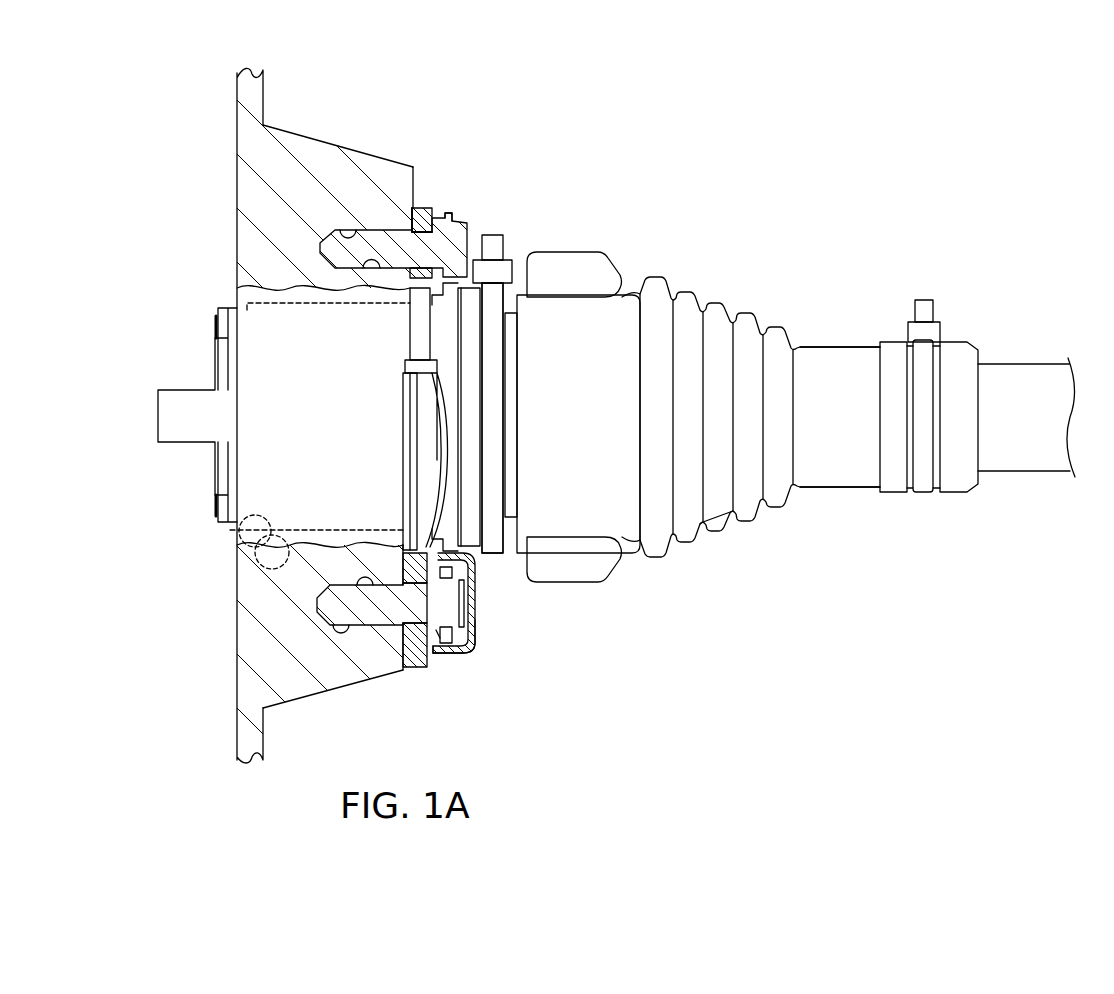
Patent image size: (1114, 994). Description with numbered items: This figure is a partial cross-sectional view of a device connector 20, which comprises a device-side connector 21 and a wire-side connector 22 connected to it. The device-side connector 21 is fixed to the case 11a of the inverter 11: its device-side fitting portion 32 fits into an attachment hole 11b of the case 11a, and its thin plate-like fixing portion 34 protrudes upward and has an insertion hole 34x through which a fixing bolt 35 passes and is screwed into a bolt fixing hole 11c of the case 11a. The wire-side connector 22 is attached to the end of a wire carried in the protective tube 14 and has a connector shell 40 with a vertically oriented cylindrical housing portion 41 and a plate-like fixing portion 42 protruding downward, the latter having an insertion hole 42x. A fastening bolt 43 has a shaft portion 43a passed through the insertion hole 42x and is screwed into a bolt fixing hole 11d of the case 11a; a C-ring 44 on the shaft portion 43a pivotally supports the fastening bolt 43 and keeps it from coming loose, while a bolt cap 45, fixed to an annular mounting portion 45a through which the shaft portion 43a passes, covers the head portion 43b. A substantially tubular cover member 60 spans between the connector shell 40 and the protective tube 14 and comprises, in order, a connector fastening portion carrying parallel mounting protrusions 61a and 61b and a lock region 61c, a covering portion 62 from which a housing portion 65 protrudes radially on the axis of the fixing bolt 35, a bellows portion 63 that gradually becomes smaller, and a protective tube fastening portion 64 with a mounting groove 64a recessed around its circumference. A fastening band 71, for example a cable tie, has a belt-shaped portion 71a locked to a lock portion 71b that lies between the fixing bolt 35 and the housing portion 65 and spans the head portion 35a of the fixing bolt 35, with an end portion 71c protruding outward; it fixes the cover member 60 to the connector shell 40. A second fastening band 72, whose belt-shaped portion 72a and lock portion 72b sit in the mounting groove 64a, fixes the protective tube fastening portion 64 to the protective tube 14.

The inverter 11 is at (268, 94).
The case 11a is at (337, 140).
The attachment hole 11b is at (237, 526).
The bolt fixing hole 11c is at (338, 228).
The bolt fixing hole 11d is at (320, 622).
The protective tube 14 is at (1033, 364).
The device connector 20 is at (624, 154).
The device-side connector 21 is at (214, 293).
The wire-side connector 22 is at (648, 240).
The device-side fitting portion 32 is at (268, 562).
The fixing portion 34 is at (425, 209).
The insertion hole 34x is at (413, 217).
The fixing bolt 35 is at (388, 229).
The head portion 35a is at (449, 215).
The connector shell 40 is at (370, 461).
The housing portion 41 is at (428, 470).
The fixing portion 42 is at (425, 545).
The insertion hole 42x is at (462, 582).
The fastening bolt 43 is at (470, 598).
The shaft portion 43a is at (366, 627).
The head portion 43b is at (476, 636).
The C-ring 44 is at (403, 664).
The bolt cap 45 is at (465, 652).
The mounting portion 45a is at (433, 655).
The cover member 60 is at (730, 304).
The mounting protrusion 61a is at (473, 474).
The mounting protrusion 61b is at (513, 434).
The lock region 61c is at (434, 313).
The covering portion 62 is at (613, 562).
The bellows portion 63 is at (731, 522).
The protective tube fastening portion 64 is at (840, 488).
The mounting groove 64a is at (908, 493).
The housing portion 65 is at (621, 265).
The fastening band 71 is at (520, 262).
The belt-shaped portion 71a is at (494, 393).
The lock portion 71b is at (511, 262).
The end portion 71c is at (492, 236).
The fastening band 72 is at (980, 374).
The belt-shaped portion 72a is at (927, 365).
The lock portion 72b is at (933, 328).